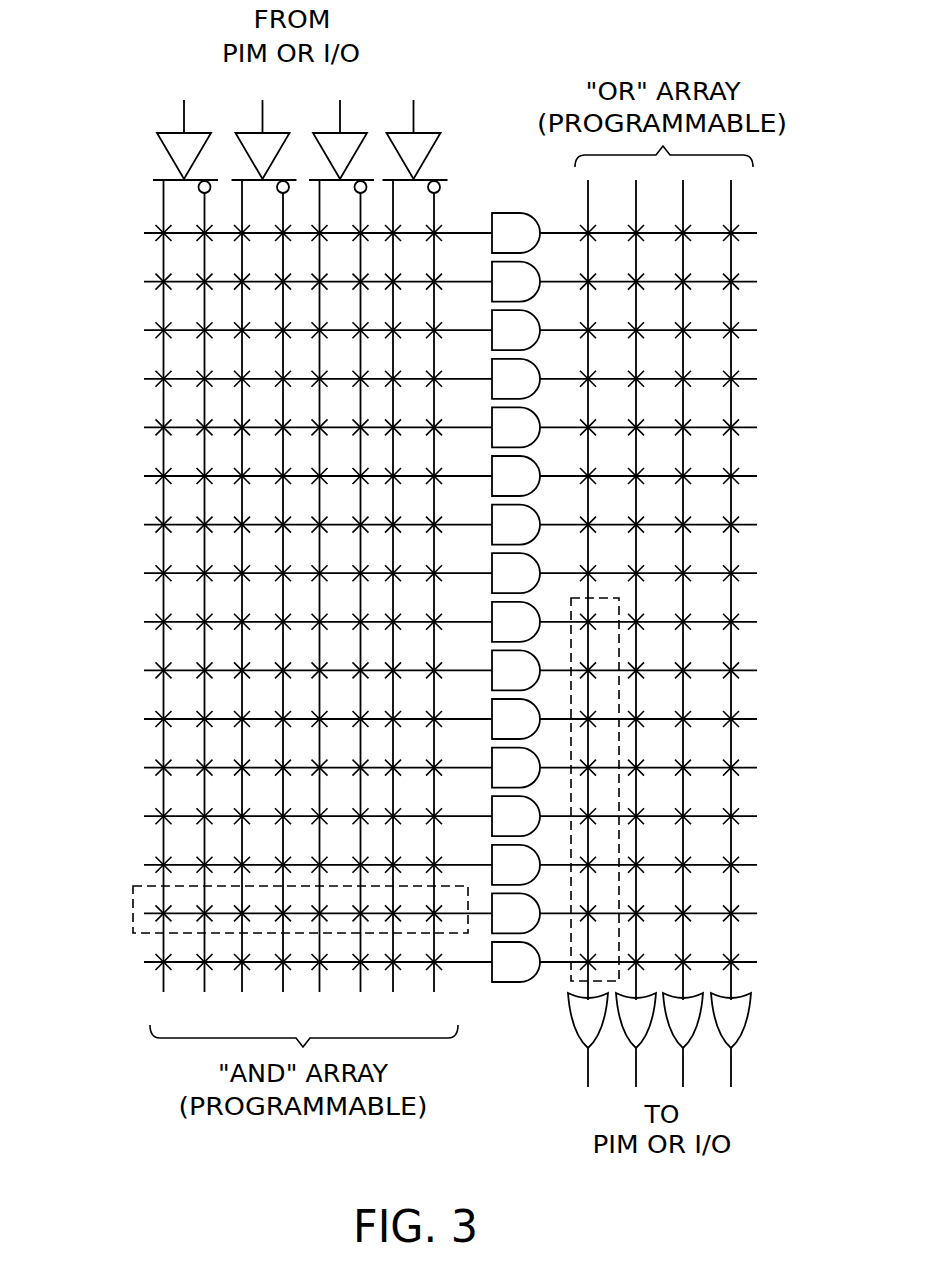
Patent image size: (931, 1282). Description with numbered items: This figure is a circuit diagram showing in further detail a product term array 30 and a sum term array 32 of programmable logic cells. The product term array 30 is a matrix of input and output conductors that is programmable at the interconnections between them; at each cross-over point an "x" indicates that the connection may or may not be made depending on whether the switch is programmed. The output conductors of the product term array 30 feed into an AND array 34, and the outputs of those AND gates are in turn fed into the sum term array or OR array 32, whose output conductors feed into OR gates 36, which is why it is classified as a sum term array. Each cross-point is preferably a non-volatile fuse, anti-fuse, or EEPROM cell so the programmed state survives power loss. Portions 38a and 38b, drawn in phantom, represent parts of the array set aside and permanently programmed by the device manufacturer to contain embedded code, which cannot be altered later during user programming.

The product term array 30 is at (136, 261).
The sum term array 32 is at (777, 398).
The AND array 34 is at (518, 1003).
The OR gates 36 is at (768, 1010).
The permanently programmed portion 38a is at (133, 908).
The permanently programmed portion 38b is at (619, 648).